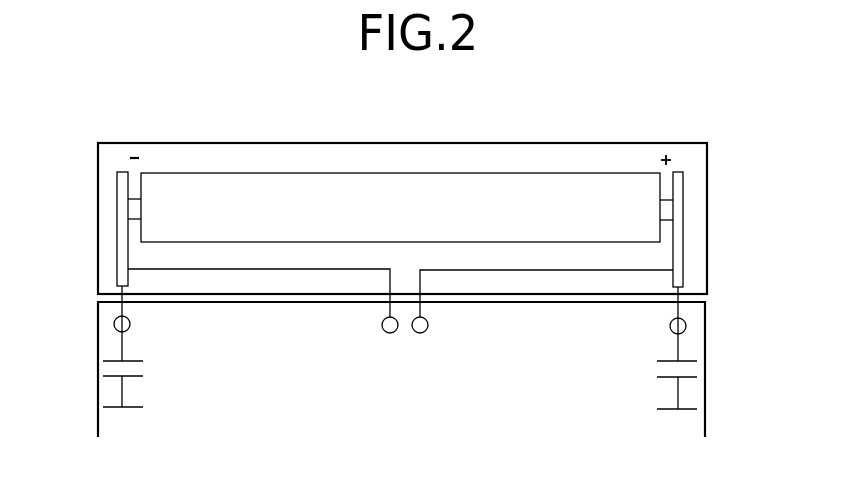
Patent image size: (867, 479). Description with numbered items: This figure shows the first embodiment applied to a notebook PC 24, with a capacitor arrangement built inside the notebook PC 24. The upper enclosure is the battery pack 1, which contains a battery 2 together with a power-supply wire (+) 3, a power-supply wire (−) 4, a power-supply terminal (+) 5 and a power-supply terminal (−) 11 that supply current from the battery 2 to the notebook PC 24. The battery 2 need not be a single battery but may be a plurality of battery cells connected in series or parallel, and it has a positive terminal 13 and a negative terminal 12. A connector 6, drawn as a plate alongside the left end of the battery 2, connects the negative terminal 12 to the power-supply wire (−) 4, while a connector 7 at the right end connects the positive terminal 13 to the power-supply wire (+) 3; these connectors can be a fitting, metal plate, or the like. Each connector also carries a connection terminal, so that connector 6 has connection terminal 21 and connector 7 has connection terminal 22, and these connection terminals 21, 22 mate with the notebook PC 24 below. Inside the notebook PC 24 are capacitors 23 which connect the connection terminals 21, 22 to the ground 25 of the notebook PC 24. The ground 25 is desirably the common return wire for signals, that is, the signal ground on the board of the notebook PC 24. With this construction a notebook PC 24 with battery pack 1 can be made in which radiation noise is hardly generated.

The battery pack 1 is at (708, 157).
The battery 2 is at (588, 173).
The power-supply wire (+) 3 is at (475, 270).
The power-supply wire (−) 4 is at (303, 270).
The power-supply terminal (+) 5 is at (417, 335).
The connector 6 is at (120, 262).
The connector 7 is at (679, 257).
The power-supply terminal (−) 11 is at (388, 335).
The negative terminal 12 is at (135, 213).
The positive terminal 13 is at (667, 209).
The connection terminal 21 is at (130, 323).
The connection terminal 22 is at (670, 327).
The capacitor 23 is at (138, 367).
The notebook PC 24 is at (708, 329).
The ground 25 is at (143, 405).